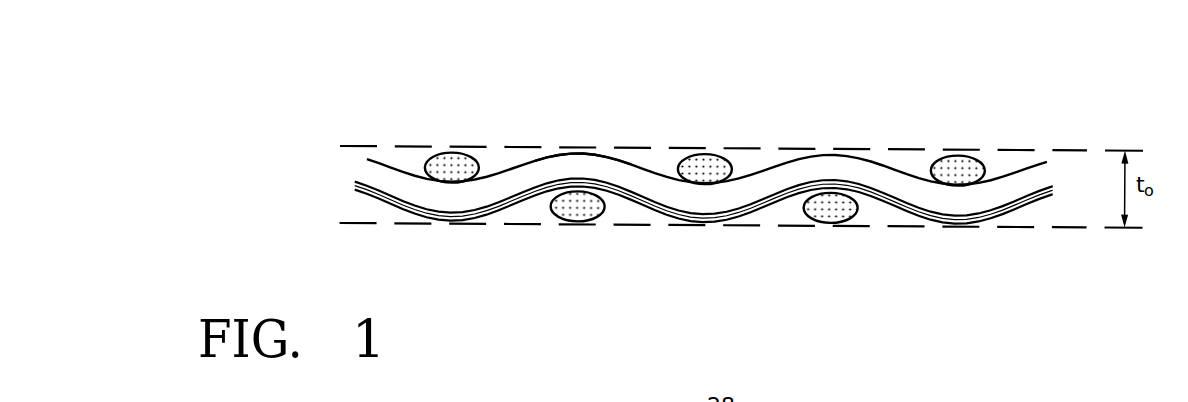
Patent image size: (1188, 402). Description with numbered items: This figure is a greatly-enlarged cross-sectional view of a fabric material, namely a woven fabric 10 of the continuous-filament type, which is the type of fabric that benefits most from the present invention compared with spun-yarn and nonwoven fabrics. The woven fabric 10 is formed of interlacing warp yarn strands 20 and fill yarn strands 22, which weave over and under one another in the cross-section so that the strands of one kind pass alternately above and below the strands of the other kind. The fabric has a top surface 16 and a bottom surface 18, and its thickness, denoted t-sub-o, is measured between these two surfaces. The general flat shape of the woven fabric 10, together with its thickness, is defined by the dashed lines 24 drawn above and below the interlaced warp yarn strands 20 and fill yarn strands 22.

The woven fabric 10 is at (893, 88).
The top surface 16 is at (743, 147).
The bottom surface 18 is at (902, 227).
The warp yarn strands 20 is at (582, 160).
The fill yarn strands 22 is at (962, 163).
The dashed lines 24 is at (401, 147).